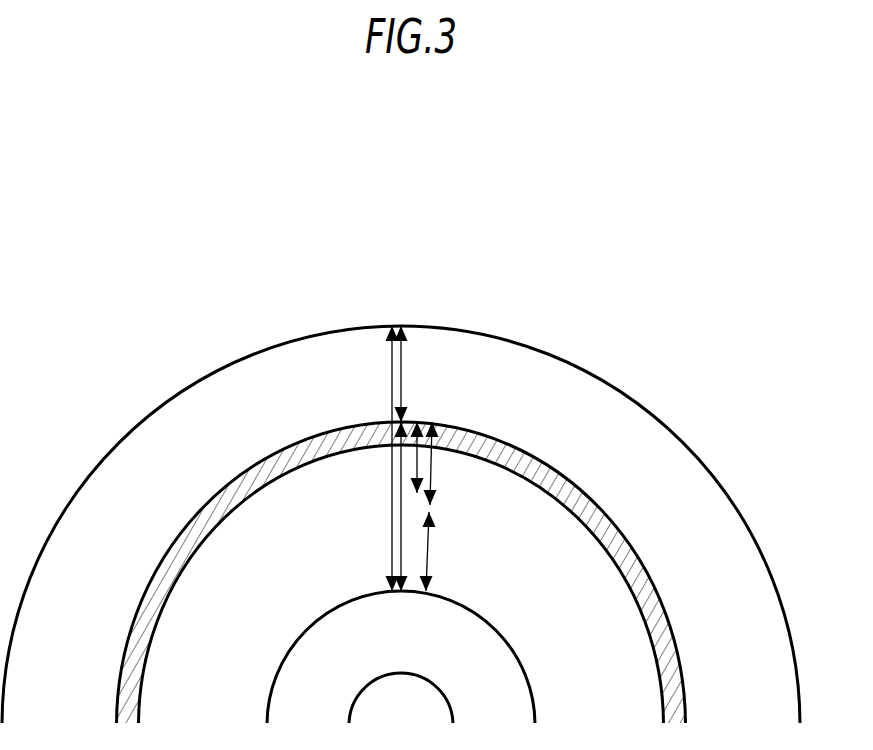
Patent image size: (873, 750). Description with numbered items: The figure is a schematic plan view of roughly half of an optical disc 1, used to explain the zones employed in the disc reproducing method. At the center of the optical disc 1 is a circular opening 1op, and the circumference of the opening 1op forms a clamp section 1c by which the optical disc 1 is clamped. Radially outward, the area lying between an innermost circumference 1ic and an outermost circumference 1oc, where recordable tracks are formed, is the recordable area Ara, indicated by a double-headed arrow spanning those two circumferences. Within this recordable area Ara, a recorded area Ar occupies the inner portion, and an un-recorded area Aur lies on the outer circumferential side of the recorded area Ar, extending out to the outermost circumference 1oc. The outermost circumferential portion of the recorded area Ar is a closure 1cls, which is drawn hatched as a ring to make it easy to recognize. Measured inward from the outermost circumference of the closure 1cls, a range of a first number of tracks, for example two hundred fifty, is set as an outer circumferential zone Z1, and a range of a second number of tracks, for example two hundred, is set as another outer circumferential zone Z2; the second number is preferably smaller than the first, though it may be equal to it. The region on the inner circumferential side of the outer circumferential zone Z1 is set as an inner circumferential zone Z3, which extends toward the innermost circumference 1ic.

The optical disc 1 is at (401, 472).
The outermost circumference 1oc is at (438, 328).
The closure 1cls is at (502, 452).
The innermost circumference 1ic is at (477, 612).
The clamp section 1c is at (338, 635).
The opening 1op is at (437, 693).
The un-recorded area Aur is at (418, 374).
The recordable area Ara is at (372, 458).
The recorded area Ar is at (402, 547).
The outer circumferential zone Z1 is at (431, 480).
The outer circumferential zone Z2 is at (417, 457).
The inner circumferential zone Z3 is at (429, 537).